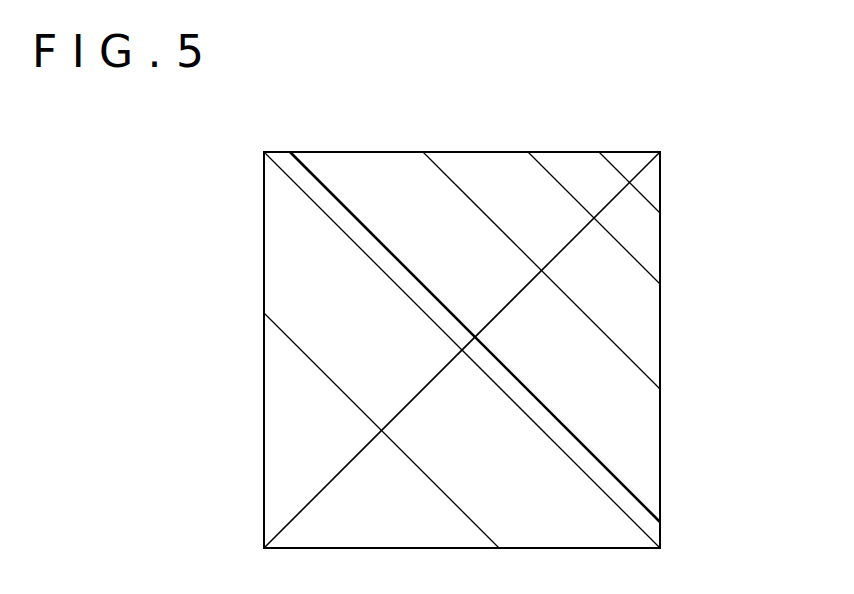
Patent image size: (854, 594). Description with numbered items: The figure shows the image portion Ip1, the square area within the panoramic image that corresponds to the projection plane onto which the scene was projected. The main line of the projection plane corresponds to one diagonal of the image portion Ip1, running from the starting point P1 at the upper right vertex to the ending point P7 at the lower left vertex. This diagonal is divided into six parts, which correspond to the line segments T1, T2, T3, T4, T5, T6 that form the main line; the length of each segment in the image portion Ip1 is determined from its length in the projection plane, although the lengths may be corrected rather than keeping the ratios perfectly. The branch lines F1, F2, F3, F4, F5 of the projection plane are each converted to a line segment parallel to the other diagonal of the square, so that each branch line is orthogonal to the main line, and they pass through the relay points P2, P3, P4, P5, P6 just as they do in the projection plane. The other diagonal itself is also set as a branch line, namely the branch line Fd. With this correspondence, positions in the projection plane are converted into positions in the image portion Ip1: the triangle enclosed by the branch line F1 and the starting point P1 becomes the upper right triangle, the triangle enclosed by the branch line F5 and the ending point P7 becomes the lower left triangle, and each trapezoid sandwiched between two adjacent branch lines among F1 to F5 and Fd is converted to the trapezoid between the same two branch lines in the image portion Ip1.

The image portion Ip1 is at (722, 405).
The branch line F1 is at (607, 160).
The branch line F2 is at (541, 165).
The branch line F3 is at (437, 166).
The branch line F4 is at (305, 167).
The branch line F5 is at (290, 340).
The branch line Fd is at (298, 188).
The starting point P1 is at (684, 148).
The relay point P2 is at (628, 183).
The relay point P3 is at (593, 218).
The relay point P4 is at (540, 271).
The relay point P5 is at (475, 337).
The relay point P6 is at (383, 430).
The ending point P7 is at (252, 562).
The line segment T1 is at (643, 176).
The line segment T2 is at (627, 224).
The line segment T3 is at (582, 267).
The line segment T4 is at (524, 327).
The line segment T5 is at (441, 412).
The line segment T6 is at (339, 512).